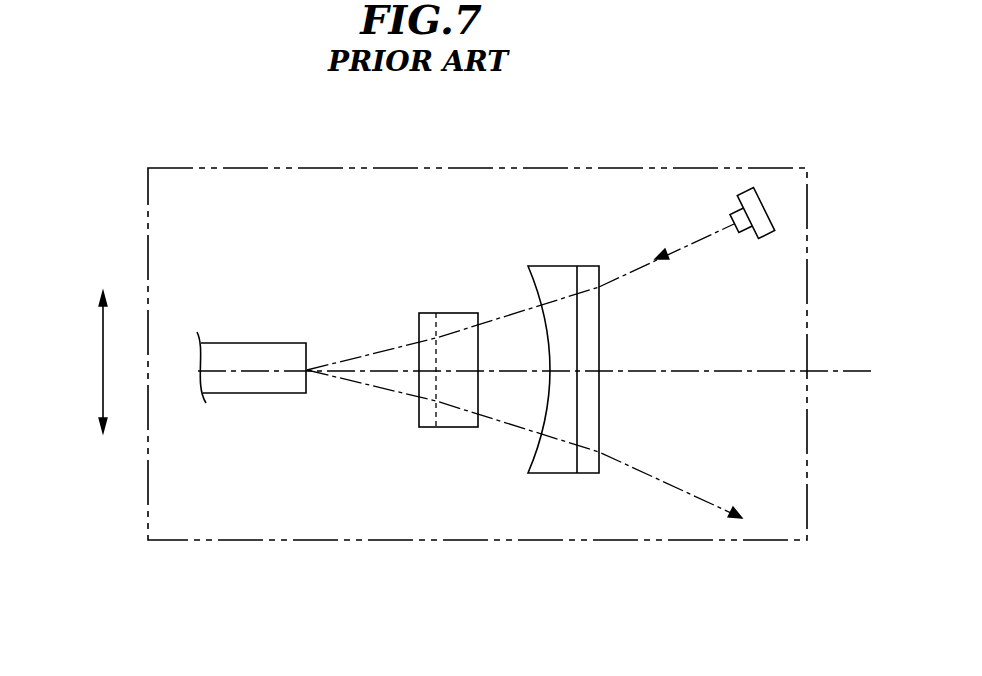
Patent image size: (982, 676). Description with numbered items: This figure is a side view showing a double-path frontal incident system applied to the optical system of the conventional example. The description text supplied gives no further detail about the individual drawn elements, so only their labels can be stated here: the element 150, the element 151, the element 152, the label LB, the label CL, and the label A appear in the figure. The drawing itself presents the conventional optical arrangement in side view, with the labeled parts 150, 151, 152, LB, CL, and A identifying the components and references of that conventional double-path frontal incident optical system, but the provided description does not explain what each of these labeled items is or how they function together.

The lens group 150 is at (600, 255).
The laser light source 151 is at (747, 190).
The light receiving element 152 is at (283, 343).
The laser beam LB is at (698, 242).
The center line CL is at (857, 370).
The direction of movement A is at (103, 366).